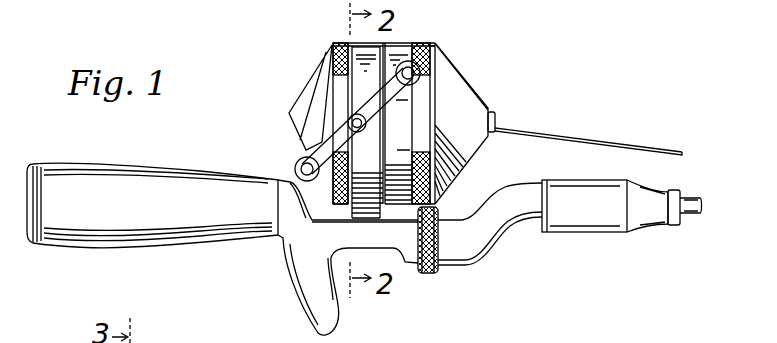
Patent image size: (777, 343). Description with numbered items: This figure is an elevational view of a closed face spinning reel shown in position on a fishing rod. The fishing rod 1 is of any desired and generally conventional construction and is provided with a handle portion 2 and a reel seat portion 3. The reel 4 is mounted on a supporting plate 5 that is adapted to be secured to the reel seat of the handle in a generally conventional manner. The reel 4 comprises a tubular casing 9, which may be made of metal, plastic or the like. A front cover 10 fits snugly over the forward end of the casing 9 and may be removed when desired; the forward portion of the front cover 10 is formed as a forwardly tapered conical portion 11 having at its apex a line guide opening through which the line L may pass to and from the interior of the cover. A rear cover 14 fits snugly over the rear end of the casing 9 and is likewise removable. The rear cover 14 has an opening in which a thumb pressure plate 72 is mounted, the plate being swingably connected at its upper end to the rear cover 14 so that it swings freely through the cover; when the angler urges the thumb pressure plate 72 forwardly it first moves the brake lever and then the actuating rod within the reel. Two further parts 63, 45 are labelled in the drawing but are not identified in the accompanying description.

The fishing rod 1 is at (592, 246).
The handle portion 2 is at (172, 165).
The reel seat portion 3 is at (460, 266).
The reel 4 is at (421, 33).
The supporting plate 5 is at (455, 212).
The tubular casing 9 is at (375, 44).
The front cover 10 is at (431, 44).
The conical portion 11 is at (455, 64).
The rear cover 14 is at (306, 101).
The thumb pressure plate 72 is at (318, 90).
The line L is at (588, 136).
The trigger 63 is at (161, 336).
The guard 45 is at (259, 336).